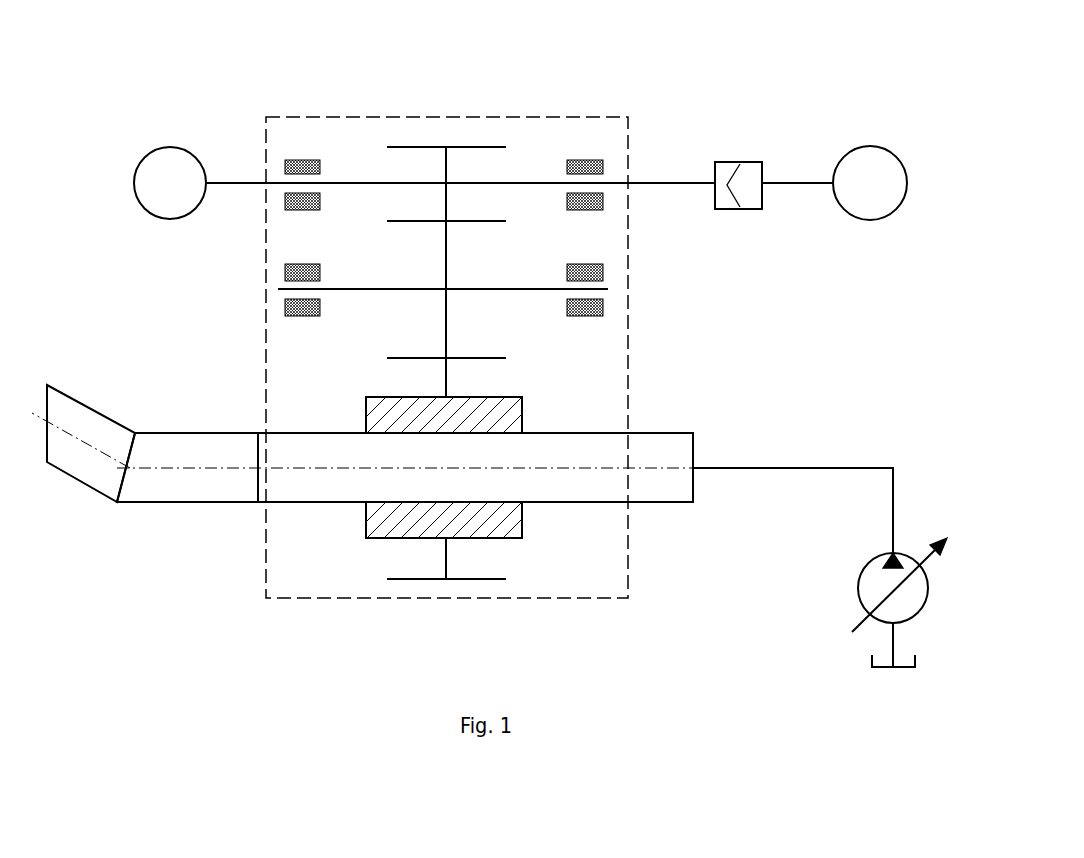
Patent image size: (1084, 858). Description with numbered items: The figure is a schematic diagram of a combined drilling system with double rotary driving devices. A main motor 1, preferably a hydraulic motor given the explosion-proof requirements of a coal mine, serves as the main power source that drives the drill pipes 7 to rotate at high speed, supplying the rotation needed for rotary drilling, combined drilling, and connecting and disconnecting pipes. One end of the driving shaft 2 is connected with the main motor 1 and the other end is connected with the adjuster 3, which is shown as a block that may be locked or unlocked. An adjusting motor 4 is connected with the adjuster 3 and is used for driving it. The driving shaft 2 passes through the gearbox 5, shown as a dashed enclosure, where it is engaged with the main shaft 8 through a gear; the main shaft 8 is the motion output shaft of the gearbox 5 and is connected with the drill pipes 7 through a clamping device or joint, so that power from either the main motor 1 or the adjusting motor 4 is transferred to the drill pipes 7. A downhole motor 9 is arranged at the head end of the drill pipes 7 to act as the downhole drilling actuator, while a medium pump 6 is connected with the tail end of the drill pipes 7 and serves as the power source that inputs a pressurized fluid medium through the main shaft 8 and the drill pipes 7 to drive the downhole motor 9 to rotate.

The main motor 1 is at (150, 150).
The driving shaft 2 is at (245, 181).
The adjuster 3 is at (718, 160).
The adjusting motor 4 is at (875, 150).
The gearbox 5 is at (630, 367).
The medium pump 6 is at (860, 583).
The drill pipe 7 is at (647, 495).
The main shaft 8 is at (368, 538).
The downhole motor 9 is at (188, 492).